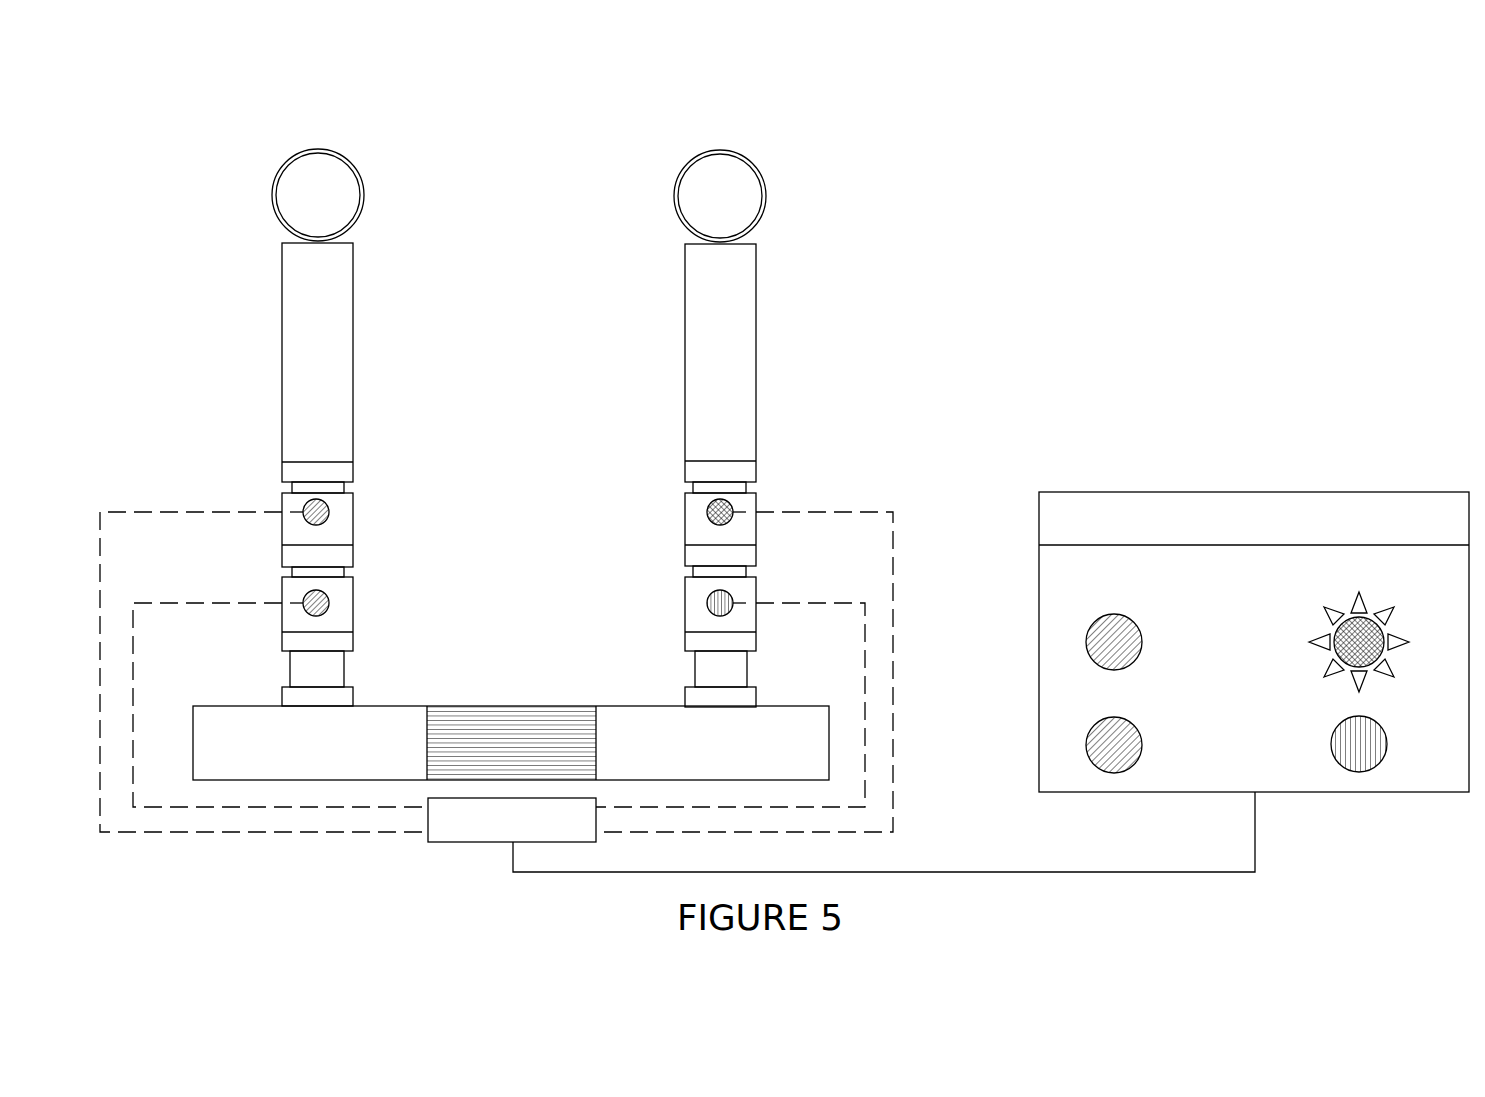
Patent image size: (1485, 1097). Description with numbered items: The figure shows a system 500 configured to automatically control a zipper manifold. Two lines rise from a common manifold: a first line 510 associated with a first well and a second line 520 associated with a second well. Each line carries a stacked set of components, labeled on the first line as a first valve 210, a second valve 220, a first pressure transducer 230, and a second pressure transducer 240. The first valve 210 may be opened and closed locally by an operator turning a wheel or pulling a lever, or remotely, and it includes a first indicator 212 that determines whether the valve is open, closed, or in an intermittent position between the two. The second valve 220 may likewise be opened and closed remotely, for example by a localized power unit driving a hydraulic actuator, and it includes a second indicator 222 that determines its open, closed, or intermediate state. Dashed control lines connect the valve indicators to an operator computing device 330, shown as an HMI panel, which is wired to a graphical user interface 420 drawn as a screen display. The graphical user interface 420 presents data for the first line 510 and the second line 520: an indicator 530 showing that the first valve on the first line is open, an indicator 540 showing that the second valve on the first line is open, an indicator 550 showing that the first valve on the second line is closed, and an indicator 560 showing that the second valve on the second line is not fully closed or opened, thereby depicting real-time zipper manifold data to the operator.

The system 500 is at (382, 112).
The first line 510 is at (360, 195).
The second line 520 is at (764, 190).
The second pressure transducer 240 is at (315, 485).
The second indicator 222 is at (330, 516).
The second valve 220 is at (353, 545).
The first pressure transducer 230 is at (317, 572).
The first indicator 212 is at (330, 604).
The first valve 210 is at (353, 632).
The operator computing device 330 is at (457, 842).
The graphical user interface 420 is at (1230, 507).
The indicator 530 is at (1086, 742).
The indicator 540 is at (1086, 641).
The indicator 550 is at (1330, 745).
The indicator 560 is at (1333, 633).